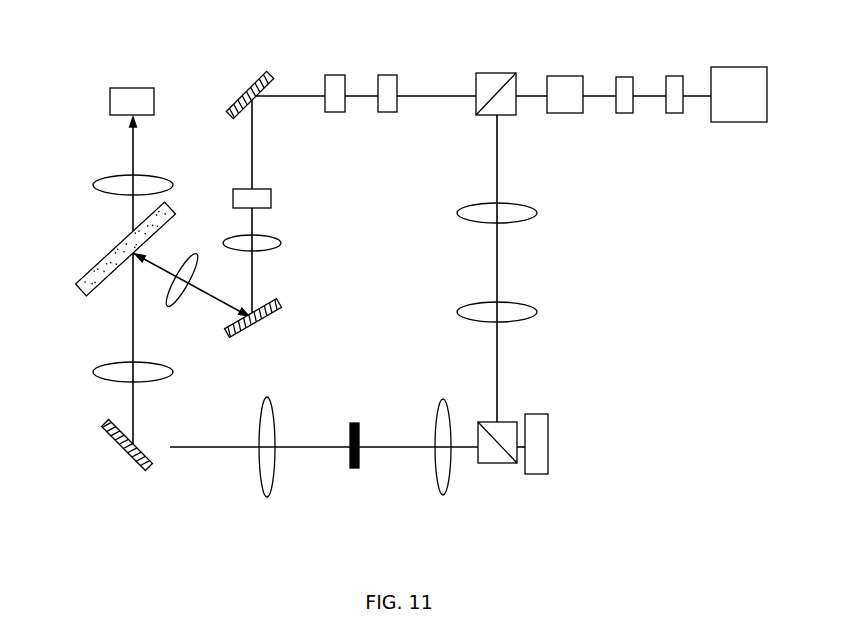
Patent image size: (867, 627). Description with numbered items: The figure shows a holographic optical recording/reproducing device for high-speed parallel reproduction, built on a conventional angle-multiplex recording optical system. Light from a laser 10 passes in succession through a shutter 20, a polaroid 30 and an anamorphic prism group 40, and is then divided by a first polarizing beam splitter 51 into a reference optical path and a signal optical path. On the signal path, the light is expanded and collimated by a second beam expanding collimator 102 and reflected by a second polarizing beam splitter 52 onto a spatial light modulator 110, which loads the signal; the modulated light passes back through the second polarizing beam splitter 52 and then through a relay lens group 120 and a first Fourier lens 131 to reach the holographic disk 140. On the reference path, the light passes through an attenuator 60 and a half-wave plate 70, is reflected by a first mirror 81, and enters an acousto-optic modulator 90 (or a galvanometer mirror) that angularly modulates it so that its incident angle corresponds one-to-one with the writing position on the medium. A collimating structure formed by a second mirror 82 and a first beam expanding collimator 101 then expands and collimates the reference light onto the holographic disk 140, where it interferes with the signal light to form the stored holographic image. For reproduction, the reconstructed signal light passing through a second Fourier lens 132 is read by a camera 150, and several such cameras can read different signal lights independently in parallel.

The laser 10 is at (739, 80).
The shutter 20 is at (670, 75).
The polaroid 30 is at (625, 75).
The anamorphic prism group 40 is at (565, 75).
The first polarizing beam splitter 51 is at (496, 76).
The second polarizing beam splitter 52 is at (497, 462).
The attenuator 60 is at (387, 75).
The half-wave plate 70 is at (333, 75).
The first mirror 81 is at (249, 79).
The second mirror 82 is at (255, 325).
The acousto-optic modulator 90 is at (268, 201).
The first beam expanding collimator 101 is at (183, 261).
The second beam expanding collimator 102 is at (550, 200).
The spatial light modulator 110 is at (565, 444).
The relay lens group 120 is at (255, 503).
The first Fourier lens 131 is at (103, 374).
The second Fourier lens 132 is at (103, 185).
The holographic disk 140 is at (105, 250).
The camera 150 is at (132, 82).